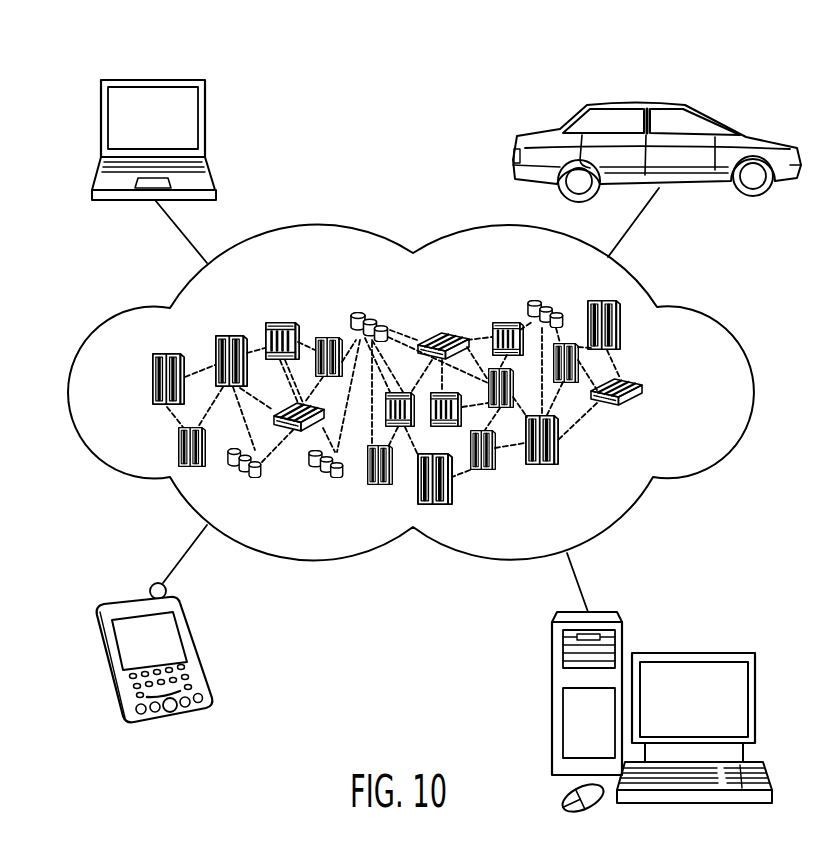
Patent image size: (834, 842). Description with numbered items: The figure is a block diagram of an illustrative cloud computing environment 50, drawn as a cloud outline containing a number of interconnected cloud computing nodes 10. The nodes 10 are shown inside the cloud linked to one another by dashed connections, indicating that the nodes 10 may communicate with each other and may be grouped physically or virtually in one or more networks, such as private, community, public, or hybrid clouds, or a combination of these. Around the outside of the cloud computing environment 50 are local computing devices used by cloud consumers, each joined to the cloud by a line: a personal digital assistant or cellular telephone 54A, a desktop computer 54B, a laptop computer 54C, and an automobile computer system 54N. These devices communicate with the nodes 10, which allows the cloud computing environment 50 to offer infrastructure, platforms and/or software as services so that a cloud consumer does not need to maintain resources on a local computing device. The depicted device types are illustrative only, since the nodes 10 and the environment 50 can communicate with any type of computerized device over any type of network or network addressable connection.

The cloud computing node 10 is at (660, 393).
The cloud computing environment 50 is at (705, 307).
The personal digital assistant or cellular telephone 54A is at (135, 597).
The desktop computer 54B is at (694, 652).
The laptop computer 54C is at (152, 78).
The automobile computer system 54N is at (640, 103).